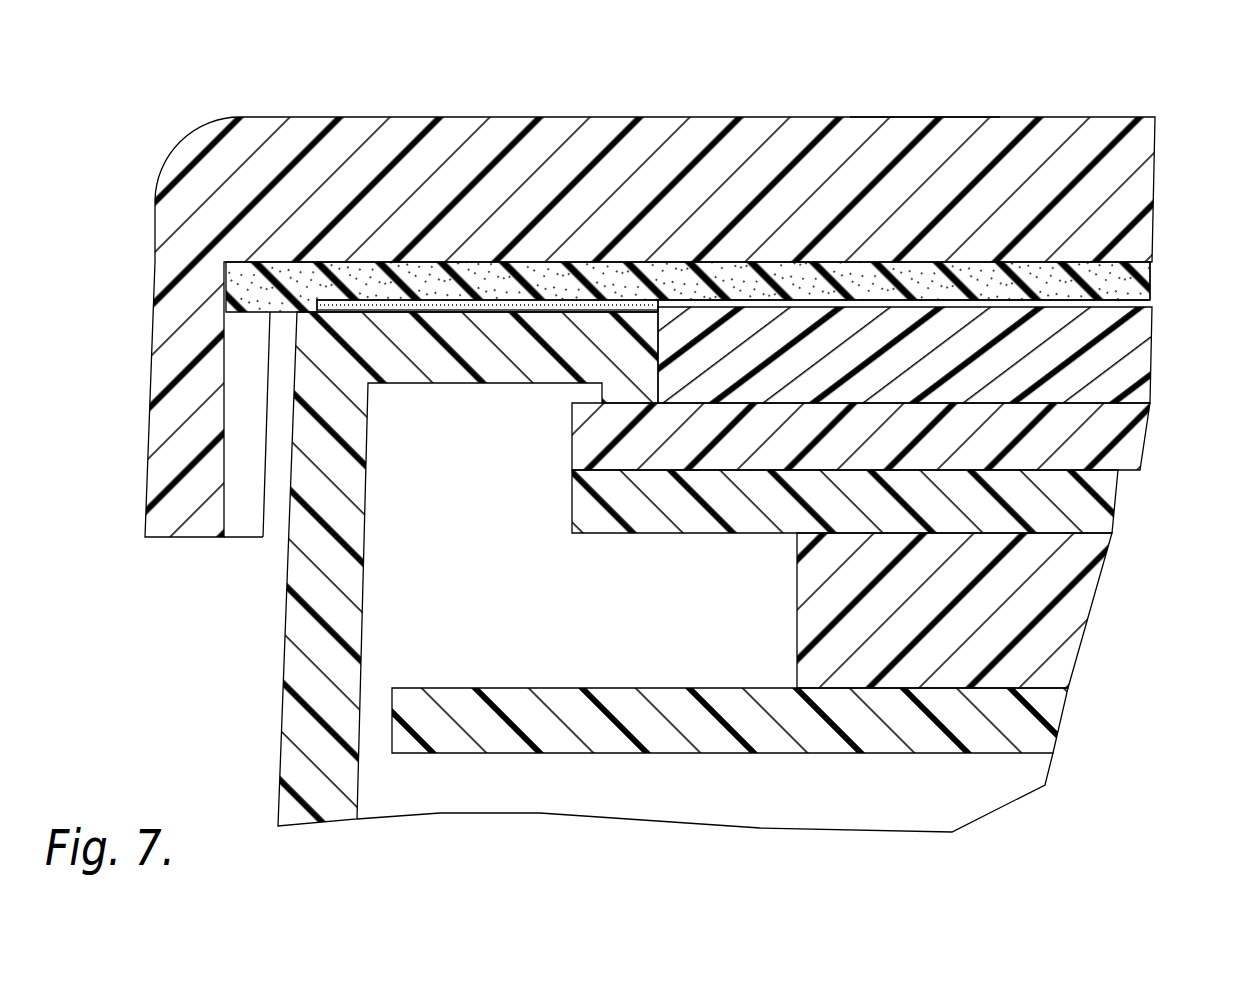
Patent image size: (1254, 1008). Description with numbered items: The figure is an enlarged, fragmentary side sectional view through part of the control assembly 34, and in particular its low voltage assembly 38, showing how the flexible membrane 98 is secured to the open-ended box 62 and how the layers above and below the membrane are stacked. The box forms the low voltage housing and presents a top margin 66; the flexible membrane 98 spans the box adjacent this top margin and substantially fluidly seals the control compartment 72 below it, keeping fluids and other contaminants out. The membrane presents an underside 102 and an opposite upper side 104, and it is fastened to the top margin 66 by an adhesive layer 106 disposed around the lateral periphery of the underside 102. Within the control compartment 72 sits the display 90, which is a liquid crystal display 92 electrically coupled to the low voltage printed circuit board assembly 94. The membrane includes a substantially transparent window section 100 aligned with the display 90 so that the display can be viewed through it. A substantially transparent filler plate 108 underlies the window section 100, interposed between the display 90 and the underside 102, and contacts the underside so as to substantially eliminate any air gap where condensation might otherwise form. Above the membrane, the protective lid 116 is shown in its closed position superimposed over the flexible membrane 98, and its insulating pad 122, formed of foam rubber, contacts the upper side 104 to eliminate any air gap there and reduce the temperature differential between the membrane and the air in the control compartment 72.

The control assembly 34 is at (651, 572).
The low voltage assembly 38 is at (689, 299).
The open-ended box 62 is at (323, 592).
The top margin 66 is at (290, 318).
The control compartment 72 is at (401, 612).
The display 90 is at (713, 548).
The liquid crystal display 92 is at (600, 440).
The low voltage printed circuit board assembly 94 is at (767, 733).
The flexible membrane 98 is at (697, 305).
The window section 100 is at (1075, 292).
The underside 102 is at (800, 315).
The upper side 104 is at (922, 248).
The adhesive layer 106 is at (446, 320).
The filler plate 108 is at (1108, 340).
The protective lid 116 is at (400, 140).
The insulating pad 122 is at (483, 280).